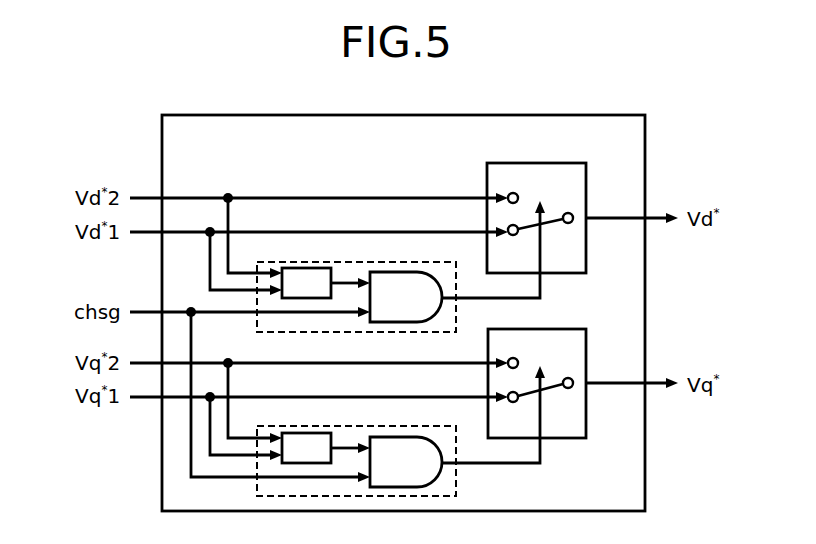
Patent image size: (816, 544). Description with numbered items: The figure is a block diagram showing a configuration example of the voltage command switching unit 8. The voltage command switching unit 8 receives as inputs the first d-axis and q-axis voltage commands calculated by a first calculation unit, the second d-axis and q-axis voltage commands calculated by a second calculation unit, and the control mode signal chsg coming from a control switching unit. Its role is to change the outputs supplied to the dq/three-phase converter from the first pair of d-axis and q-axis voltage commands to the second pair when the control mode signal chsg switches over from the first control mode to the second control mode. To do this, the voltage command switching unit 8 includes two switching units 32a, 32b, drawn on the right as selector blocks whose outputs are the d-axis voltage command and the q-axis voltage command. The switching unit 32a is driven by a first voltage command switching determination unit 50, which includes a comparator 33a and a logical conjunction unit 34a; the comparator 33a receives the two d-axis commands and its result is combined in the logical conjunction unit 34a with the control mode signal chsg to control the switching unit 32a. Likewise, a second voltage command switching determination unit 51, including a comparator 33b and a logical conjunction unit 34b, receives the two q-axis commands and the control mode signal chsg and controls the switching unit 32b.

The voltage command switching unit 8 is at (462, 115).
The switching unit 32a is at (553, 163).
The switching unit 32b is at (554, 329).
The comparator 33a is at (309, 268).
The comparator 33b is at (309, 433).
The logical conjunction unit 34a is at (387, 272).
The logical conjunction unit 34b is at (387, 437).
The first voltage command switching determination unit 50 is at (456, 300).
The second voltage command switching determination unit 51 is at (456, 466).